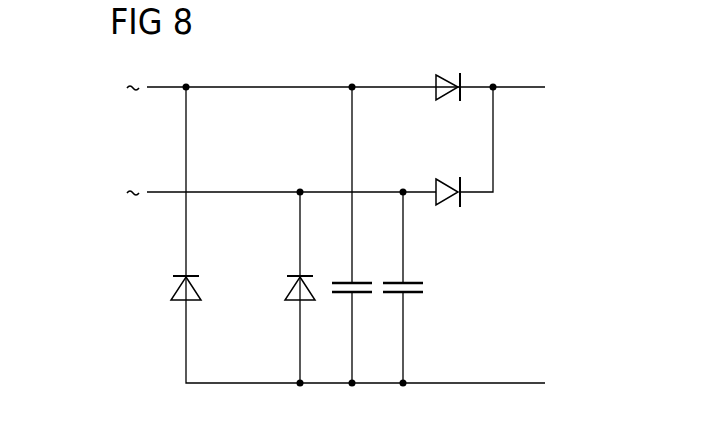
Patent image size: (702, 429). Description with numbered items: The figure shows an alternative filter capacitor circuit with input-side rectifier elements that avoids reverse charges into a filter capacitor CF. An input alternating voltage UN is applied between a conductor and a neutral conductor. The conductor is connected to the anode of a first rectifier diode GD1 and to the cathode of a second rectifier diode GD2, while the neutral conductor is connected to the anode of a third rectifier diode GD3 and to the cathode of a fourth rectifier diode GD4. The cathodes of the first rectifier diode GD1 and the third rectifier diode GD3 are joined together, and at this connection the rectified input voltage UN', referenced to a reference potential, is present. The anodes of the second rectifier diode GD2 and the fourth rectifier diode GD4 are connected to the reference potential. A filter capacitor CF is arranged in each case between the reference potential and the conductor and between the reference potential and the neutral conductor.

The first rectifier diode GD1 is at (453, 77).
The second rectifier diode GD2 is at (180, 285).
The third rectifier diode GD3 is at (449, 199).
The fourth rectifier diode GD4 is at (295, 285).
The filter capacitor CF is at (363, 280).
The input alternating voltage UN is at (144, 139).
The rectified input voltage UN' is at (535, 235).